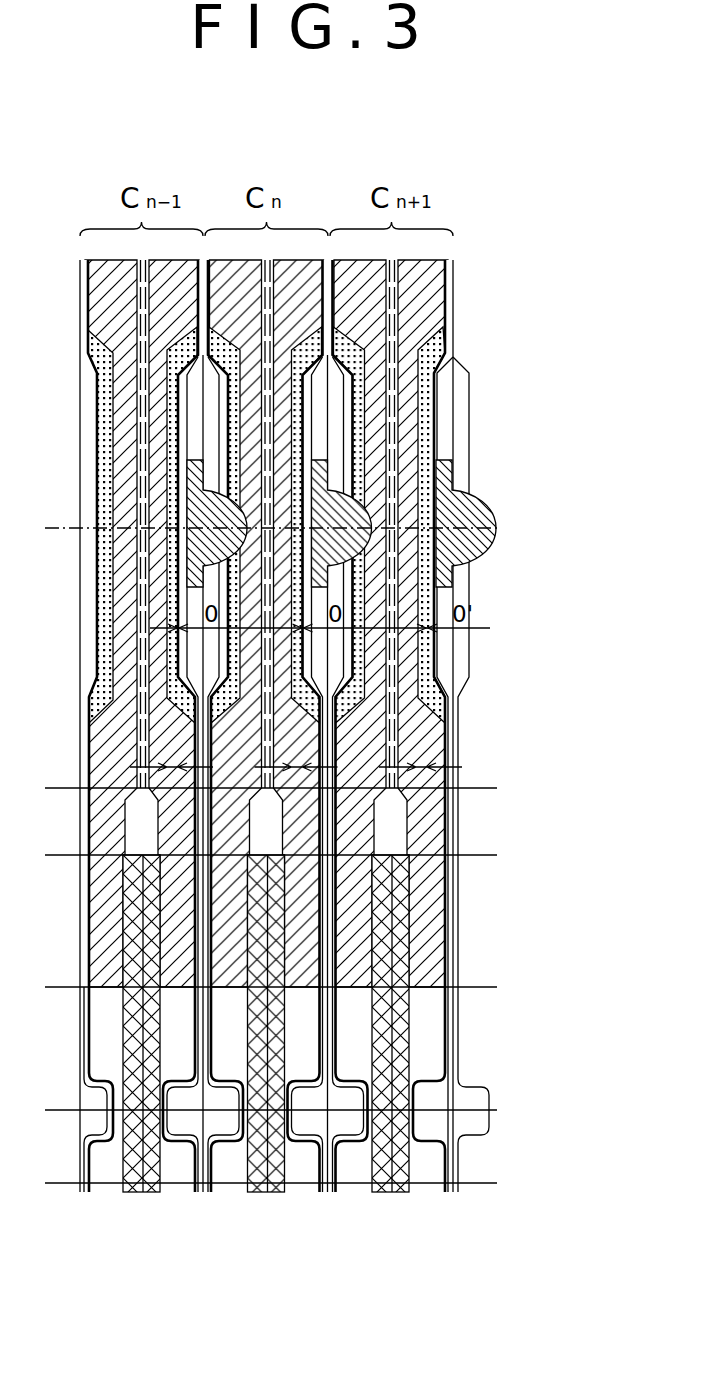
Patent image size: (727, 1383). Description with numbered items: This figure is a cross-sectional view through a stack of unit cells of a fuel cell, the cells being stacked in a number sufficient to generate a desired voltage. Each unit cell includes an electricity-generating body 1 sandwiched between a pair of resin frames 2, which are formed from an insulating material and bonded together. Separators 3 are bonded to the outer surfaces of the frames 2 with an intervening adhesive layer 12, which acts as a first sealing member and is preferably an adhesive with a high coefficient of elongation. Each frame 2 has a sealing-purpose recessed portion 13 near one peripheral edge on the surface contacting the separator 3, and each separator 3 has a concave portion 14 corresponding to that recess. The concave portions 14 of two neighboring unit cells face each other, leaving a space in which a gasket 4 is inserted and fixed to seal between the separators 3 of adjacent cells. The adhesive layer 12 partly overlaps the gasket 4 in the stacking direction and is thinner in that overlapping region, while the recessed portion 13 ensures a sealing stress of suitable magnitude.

The electricity-generating body 1 is at (408, 1028).
The resin frame 2 is at (370, 292).
The separator 3 is at (375, 413).
The gasket 4 is at (470, 503).
The adhesive layer 12 is at (445, 345).
The sealing-purpose recessed portion 13 is at (430, 667).
The concave portion 14 is at (440, 607).